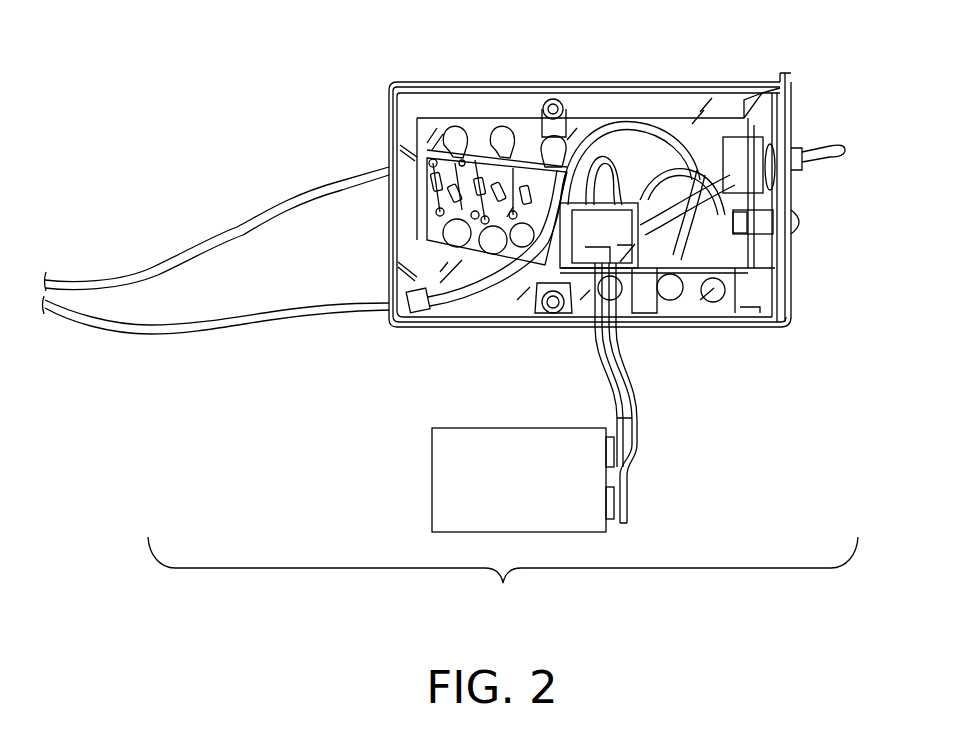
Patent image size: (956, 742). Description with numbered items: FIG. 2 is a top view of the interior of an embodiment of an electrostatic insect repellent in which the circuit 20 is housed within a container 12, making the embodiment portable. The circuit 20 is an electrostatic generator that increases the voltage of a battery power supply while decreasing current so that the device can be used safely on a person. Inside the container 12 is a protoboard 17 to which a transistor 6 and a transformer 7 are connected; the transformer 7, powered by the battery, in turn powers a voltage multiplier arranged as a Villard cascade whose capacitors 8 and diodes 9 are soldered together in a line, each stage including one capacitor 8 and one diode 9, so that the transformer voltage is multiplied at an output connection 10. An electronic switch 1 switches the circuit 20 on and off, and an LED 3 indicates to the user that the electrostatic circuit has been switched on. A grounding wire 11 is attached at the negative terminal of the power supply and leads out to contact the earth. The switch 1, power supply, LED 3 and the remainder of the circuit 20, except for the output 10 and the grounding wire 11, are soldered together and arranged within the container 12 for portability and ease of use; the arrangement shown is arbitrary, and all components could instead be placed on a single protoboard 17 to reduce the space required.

The electronic switch 1 is at (845, 151).
The LED 3 is at (804, 220).
The transistor 6 is at (668, 315).
The transformer 7 is at (498, 243).
The capacitor 8 is at (497, 133).
The diode 9 is at (447, 165).
The output connection 10 is at (357, 173).
The grounding wire 11 is at (346, 310).
The container 12 is at (740, 325).
The protoboard 17 is at (753, 268).
The circuit 20 is at (503, 578).